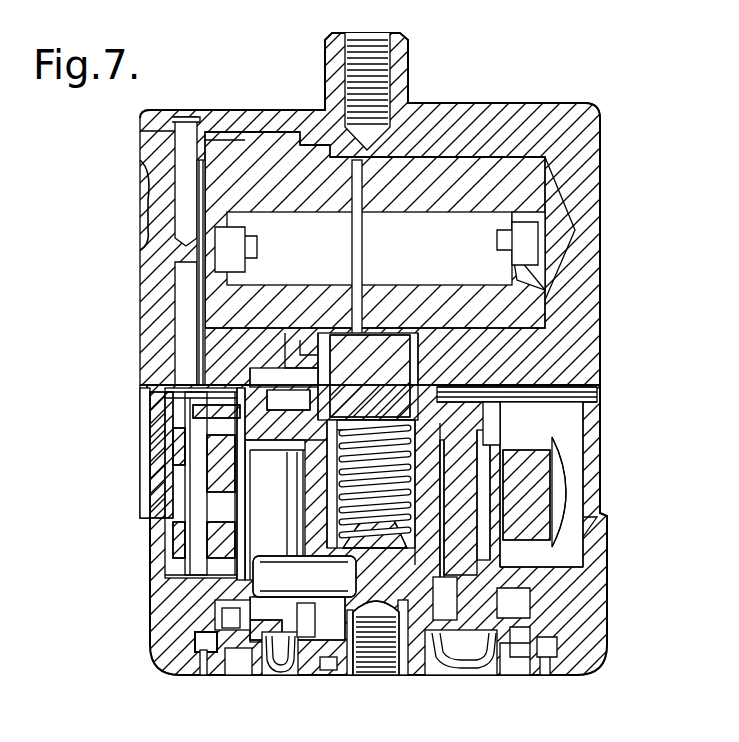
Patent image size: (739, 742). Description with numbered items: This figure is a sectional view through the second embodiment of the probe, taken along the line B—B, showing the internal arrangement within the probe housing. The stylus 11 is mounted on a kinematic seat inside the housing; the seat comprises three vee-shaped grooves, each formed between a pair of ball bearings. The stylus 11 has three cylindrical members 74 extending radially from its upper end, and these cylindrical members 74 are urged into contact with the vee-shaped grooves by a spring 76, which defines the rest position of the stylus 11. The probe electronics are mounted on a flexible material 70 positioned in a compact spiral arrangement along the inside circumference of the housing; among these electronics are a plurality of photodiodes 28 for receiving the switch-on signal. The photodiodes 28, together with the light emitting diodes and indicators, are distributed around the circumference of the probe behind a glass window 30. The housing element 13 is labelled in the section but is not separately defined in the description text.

The housing 13 is at (595, 180).
The piston 76 is at (440, 380).
The lower housing 30 is at (600, 459).
The wall 28 is at (165, 472).
The retaining clips 70 is at (174, 514).
The seal element 74 is at (278, 575).
The base 11 is at (408, 640).